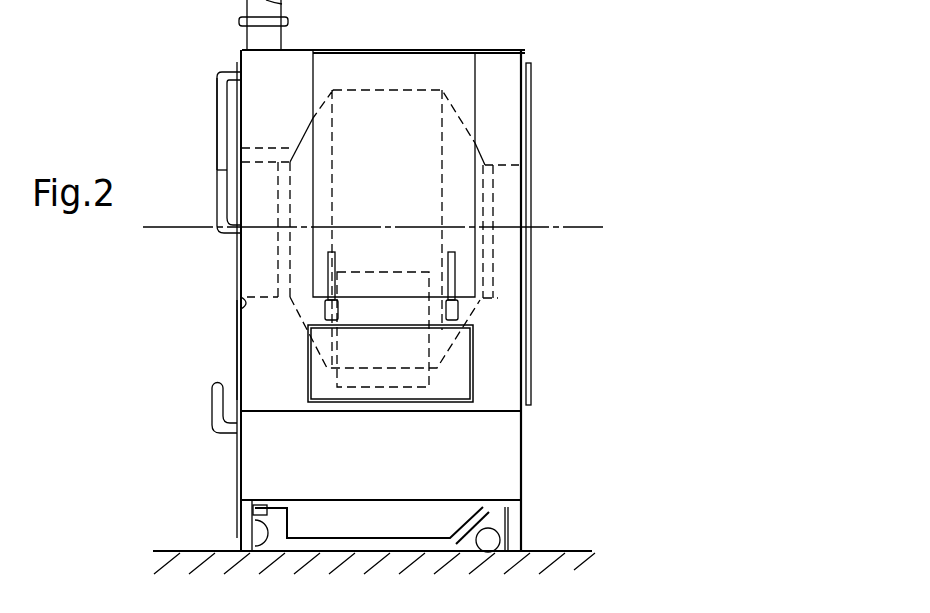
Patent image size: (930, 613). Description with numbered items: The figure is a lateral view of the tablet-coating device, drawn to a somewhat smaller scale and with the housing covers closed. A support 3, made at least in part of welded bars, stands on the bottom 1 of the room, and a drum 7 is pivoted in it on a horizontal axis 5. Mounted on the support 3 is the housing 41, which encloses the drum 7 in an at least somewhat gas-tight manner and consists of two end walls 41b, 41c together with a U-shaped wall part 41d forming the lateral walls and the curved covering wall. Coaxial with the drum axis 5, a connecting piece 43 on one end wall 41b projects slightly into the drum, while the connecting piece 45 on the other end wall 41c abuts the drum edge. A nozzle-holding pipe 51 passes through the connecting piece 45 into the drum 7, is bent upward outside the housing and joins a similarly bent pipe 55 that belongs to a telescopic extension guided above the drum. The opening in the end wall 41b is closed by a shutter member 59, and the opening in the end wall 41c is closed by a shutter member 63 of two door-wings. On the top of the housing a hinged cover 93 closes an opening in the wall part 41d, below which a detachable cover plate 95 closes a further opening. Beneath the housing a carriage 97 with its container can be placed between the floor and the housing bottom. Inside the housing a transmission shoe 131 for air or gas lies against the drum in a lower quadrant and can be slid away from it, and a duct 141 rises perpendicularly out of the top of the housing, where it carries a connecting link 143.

The bottom 1 is at (190, 551).
The support 3 is at (522, 507).
The horizontal axis 5 is at (192, 227).
The drum 7 is at (452, 90).
The housing 41 is at (297, 48).
The end wall 41b is at (525, 52).
The end wall 41c is at (240, 335).
The U-shaped wall part 41d is at (268, 363).
The connecting piece 43 is at (498, 299).
The connecting piece 45 is at (236, 308).
The nozzle-holding pipe 51 is at (216, 178).
The bent pipe 55 is at (215, 90).
The shutter member 59 is at (531, 152).
The shutter member 63 is at (237, 258).
The hinged cover 93 is at (476, 107).
The cover plate 95 is at (473, 378).
The carriage 97 is at (234, 456).
The transmission shoe 131 is at (445, 397).
The duct 141 is at (247, 39).
The connecting link 143 is at (238, 21).